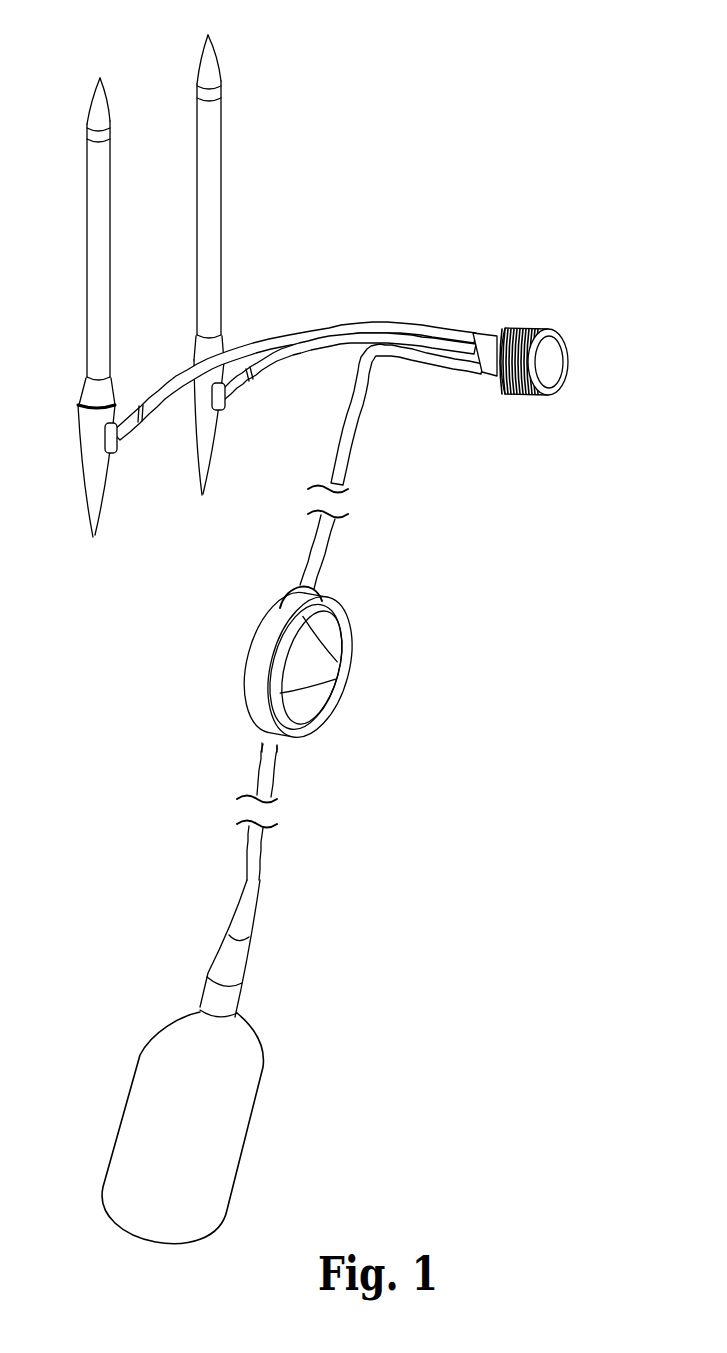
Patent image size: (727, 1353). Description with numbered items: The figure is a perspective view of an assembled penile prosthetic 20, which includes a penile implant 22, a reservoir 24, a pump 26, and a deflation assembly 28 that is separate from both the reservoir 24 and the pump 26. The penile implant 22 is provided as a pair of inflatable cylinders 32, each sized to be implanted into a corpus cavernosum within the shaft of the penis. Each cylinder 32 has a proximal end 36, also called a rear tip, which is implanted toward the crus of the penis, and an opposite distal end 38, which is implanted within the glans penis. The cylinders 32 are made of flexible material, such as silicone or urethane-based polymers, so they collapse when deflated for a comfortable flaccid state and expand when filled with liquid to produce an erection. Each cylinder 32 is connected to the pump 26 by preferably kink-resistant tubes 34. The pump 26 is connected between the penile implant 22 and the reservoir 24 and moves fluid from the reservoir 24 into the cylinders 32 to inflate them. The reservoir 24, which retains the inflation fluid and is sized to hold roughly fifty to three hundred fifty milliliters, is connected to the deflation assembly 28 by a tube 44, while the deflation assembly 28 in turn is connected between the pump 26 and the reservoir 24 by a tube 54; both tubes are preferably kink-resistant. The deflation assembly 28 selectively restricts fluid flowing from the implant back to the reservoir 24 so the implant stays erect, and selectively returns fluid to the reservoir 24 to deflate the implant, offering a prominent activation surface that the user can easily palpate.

The penile prosthetic 20 is at (632, 1245).
The penile implant 22 is at (82, 42).
The reservoir 24 is at (149, 1033).
The pump 26 is at (521, 328).
The deflation assembly 28 is at (352, 641).
The inflatable cylinders 32 is at (87, 231).
The tubes 34 is at (352, 323).
The proximal end 36 is at (93, 540).
The distal end 38 is at (100, 77).
The tube 44 is at (263, 850).
The tube 54 is at (358, 427).